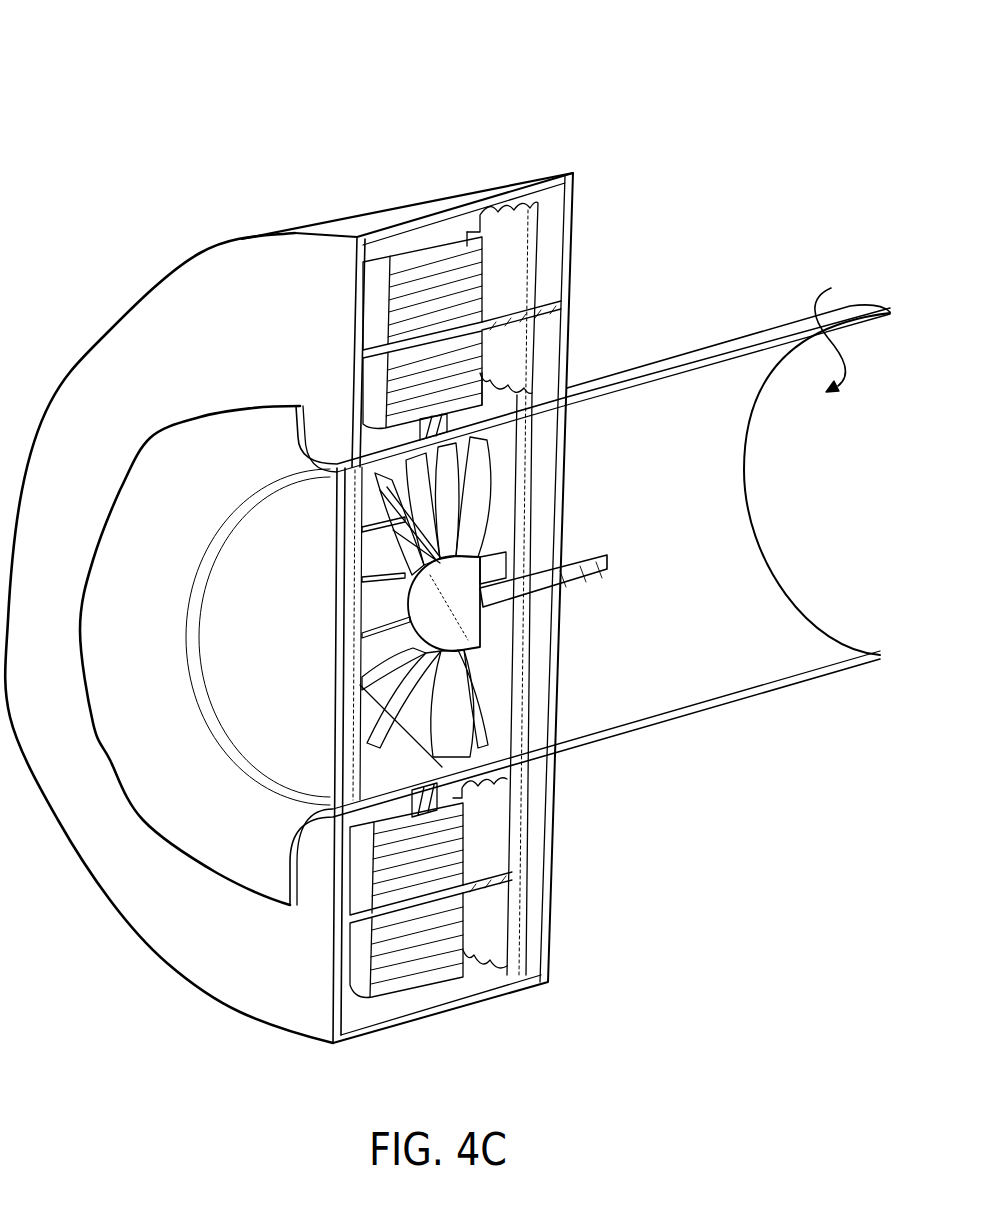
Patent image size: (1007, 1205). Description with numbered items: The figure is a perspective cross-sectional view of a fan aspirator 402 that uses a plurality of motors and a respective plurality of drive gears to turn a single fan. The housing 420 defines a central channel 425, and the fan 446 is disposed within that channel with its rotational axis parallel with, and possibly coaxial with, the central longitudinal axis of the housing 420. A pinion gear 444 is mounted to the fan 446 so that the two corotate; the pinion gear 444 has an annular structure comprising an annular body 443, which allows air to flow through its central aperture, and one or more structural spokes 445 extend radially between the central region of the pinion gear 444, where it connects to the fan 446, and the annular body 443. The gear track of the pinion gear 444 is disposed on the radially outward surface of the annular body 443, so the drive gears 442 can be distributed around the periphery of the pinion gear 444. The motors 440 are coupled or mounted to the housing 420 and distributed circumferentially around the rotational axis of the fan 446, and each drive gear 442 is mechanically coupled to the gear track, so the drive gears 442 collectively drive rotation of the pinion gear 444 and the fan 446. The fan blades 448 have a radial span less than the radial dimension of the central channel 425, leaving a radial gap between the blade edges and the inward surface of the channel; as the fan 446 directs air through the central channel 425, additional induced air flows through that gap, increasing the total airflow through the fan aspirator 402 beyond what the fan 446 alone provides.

The fan aspirator 402 is at (112, 148).
The housing 420 is at (738, 344).
The central channel 425 is at (834, 325).
The motors 440 is at (421, 272).
The drive gears 442 is at (512, 240).
The annular body 443 is at (525, 405).
The pinion gear 444 is at (526, 477).
The structural spokes 445 is at (497, 556).
The fan 446 is at (499, 655).
The fan blades 448 is at (392, 687).